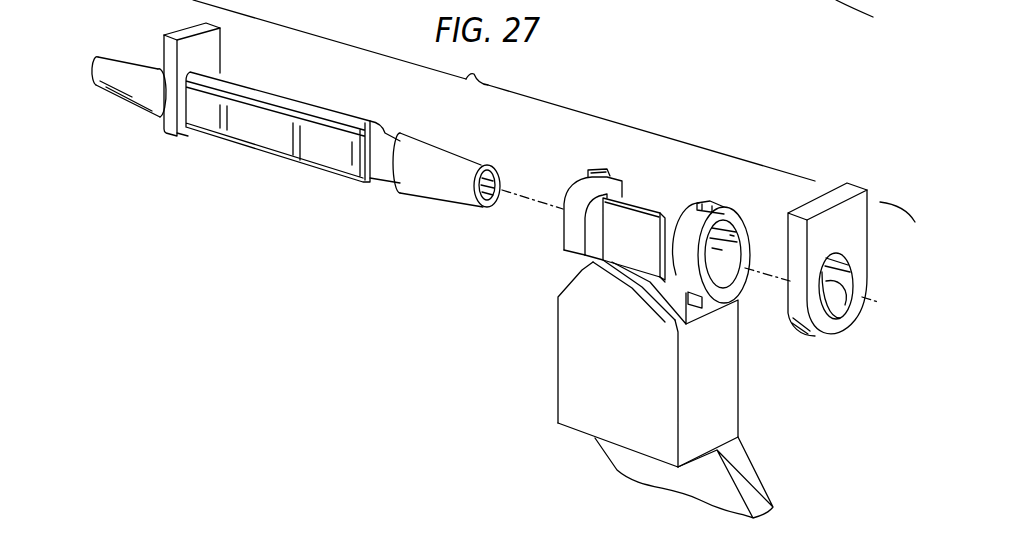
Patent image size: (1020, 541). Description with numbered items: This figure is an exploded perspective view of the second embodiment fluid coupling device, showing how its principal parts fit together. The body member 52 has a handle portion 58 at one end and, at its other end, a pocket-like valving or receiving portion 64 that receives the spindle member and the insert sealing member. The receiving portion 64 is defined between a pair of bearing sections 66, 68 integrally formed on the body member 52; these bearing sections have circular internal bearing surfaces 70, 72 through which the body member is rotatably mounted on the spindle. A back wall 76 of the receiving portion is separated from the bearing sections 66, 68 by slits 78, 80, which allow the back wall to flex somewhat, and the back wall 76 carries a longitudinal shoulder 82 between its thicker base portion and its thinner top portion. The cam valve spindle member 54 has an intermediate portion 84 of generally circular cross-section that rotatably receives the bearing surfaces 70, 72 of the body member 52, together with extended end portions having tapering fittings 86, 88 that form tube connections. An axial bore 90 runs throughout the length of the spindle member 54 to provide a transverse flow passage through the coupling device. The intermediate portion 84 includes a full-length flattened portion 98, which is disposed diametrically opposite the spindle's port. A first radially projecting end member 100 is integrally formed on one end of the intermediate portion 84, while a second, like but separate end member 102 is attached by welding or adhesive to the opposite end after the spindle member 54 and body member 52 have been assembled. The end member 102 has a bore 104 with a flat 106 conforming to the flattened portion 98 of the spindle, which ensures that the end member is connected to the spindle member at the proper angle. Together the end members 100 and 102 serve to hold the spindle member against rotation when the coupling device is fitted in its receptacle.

The body member 52 is at (540, 386).
The cam valve spindle member 54 is at (247, 170).
The handle portion 58 is at (891, 21).
The receiving portion 64 is at (650, 194).
The bearing section 66 is at (706, 204).
The bearing section 68 is at (583, 182).
The internal bearing surface 70 is at (723, 267).
The internal bearing surface 72 is at (585, 256).
The back wall 76 is at (634, 251).
The slit 78 is at (699, 289).
The slit 80 is at (595, 226).
The longitudinal shoulder 82 is at (667, 238).
The intermediate portion 84 is at (333, 178).
The tapering fitting 86 is at (126, 96).
The tapering fitting 88 is at (426, 178).
The axial bore 90 is at (500, 187).
The flattened portion 98 is at (303, 153).
The first end member 100 is at (187, 55).
The second end member 102 is at (850, 230).
The bore 104 is at (825, 278).
The flat 106 is at (828, 300).